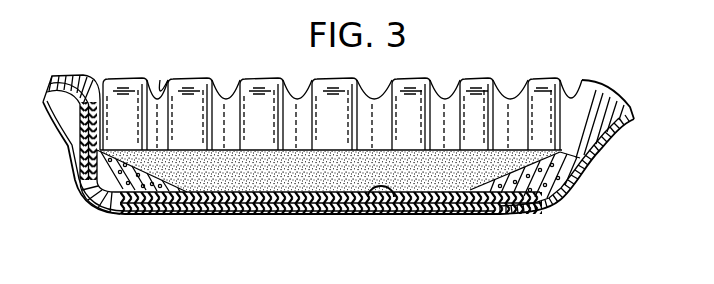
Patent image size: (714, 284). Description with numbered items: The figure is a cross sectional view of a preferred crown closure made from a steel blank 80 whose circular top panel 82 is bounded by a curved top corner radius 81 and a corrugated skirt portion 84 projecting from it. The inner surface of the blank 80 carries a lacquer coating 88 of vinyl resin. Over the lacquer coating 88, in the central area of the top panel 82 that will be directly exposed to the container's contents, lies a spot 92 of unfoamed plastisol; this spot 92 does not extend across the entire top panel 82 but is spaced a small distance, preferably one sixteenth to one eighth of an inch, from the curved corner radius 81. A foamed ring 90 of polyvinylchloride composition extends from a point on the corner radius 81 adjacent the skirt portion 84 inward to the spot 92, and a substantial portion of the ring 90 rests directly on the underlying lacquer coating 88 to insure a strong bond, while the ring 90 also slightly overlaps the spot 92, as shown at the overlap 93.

The steel blank 80 is at (243, 212).
The curved top corner radius 81 is at (97, 200).
The top panel 82 is at (302, 210).
The skirt portion 84 is at (567, 147).
The lacquer coating 88 is at (455, 205).
The foamed ring 90 is at (555, 200).
The spot of unfoamed plastisol 92 is at (393, 197).
The overlap 93 is at (155, 190).